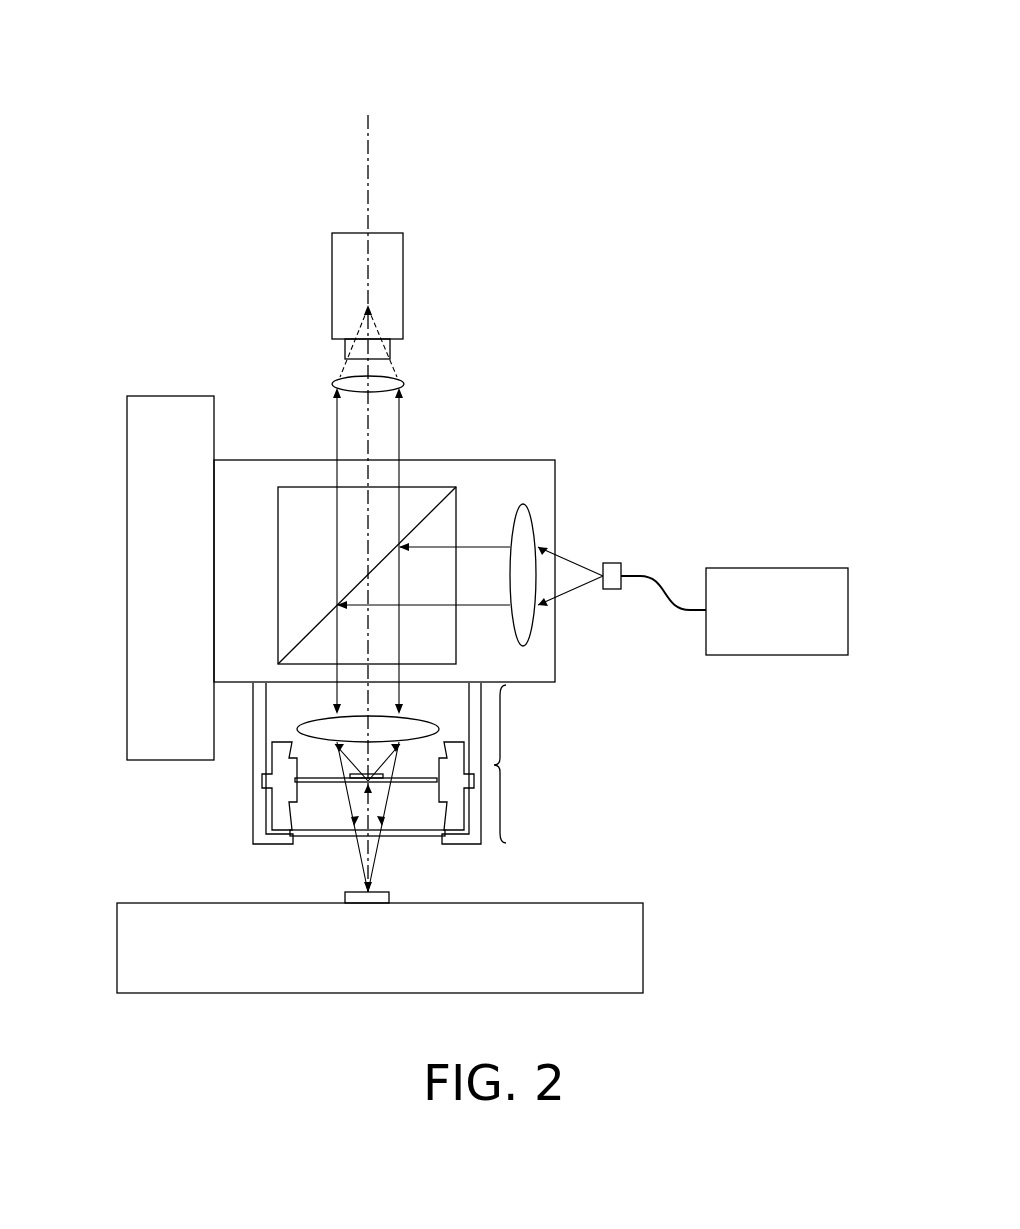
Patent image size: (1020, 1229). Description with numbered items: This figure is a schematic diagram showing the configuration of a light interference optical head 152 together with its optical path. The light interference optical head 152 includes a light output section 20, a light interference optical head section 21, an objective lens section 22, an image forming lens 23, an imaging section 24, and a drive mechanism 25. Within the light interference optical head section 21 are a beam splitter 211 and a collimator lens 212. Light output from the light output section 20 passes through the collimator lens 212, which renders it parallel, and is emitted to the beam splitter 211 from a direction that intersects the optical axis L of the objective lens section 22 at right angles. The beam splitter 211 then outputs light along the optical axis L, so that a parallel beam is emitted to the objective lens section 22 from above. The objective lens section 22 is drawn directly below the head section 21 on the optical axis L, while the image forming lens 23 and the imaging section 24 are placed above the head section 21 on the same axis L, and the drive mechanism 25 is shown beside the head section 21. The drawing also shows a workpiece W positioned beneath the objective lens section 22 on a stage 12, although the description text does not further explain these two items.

The light interference optical head 152 is at (388, 35).
The optical axis L is at (368, 166).
The imaging section 24 is at (403, 236).
The image forming lens 23 is at (405, 385).
The drive mechanism 25 is at (127, 400).
The light interference optical head section 21 is at (543, 460).
The beam splitter 211 is at (433, 486).
The collimator lens 212 is at (528, 507).
The light output section 20 is at (838, 568).
The objective lens section 22 is at (496, 765).
The workpiece W is at (390, 893).
The stage 12 is at (590, 903).